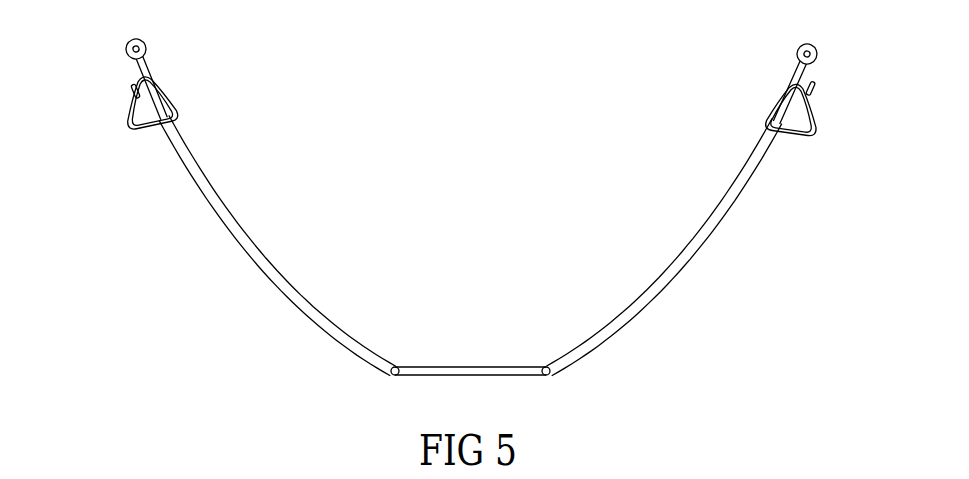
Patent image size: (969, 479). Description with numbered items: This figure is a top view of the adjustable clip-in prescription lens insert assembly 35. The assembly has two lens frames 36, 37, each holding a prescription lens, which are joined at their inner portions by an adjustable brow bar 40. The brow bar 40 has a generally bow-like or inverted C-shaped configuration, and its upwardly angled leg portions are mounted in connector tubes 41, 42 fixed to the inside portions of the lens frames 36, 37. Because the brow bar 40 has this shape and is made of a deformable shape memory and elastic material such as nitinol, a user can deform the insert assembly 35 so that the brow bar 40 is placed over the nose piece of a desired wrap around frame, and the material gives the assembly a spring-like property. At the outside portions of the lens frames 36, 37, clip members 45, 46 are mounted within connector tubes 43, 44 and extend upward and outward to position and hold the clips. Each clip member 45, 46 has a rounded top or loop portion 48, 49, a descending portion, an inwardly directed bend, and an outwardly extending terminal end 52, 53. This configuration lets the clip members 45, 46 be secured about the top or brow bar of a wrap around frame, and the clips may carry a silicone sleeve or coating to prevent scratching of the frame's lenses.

The adjustable clip-in prescription lens insert assembly 35 is at (538, 173).
The lens frame 36 is at (265, 250).
The lens frame 37 is at (678, 262).
The adjustable brow bar 40 is at (473, 368).
The connector tube 41 is at (395, 380).
The connector tube 42 is at (547, 380).
The connector tube 43 is at (158, 92).
The connector tube 44 is at (787, 97).
The clip member 45 is at (142, 116).
The clip member 46 is at (804, 109).
The loop portion 48 is at (142, 130).
The loop portion 49 is at (807, 135).
The terminal end 52 is at (137, 87).
The terminal end 53 is at (812, 87).